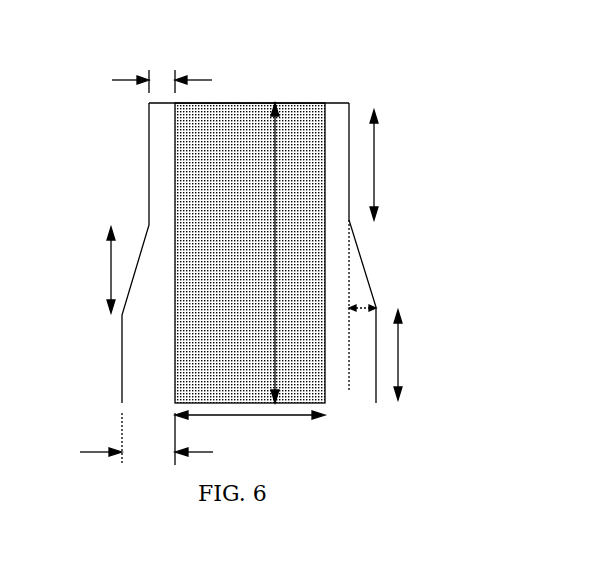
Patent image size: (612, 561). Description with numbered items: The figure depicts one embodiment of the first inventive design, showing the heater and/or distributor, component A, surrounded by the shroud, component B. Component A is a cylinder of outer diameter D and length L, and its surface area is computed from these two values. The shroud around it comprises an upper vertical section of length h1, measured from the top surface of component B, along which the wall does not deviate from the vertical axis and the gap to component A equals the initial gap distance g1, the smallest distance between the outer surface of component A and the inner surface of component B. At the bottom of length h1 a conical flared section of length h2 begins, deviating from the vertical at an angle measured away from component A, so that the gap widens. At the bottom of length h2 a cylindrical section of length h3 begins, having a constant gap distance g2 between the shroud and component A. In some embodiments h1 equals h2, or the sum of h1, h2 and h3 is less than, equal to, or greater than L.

The initial gap distance g1 is at (162, 63).
The gap distance at length h2 g2 is at (146, 439).
The vertical section length h1 is at (387, 165).
The flared section length h2 is at (95, 270).
The lower vertical section length h3 is at (412, 355).
The length of component A L is at (281, 253).
The diameter of component A D is at (250, 438).